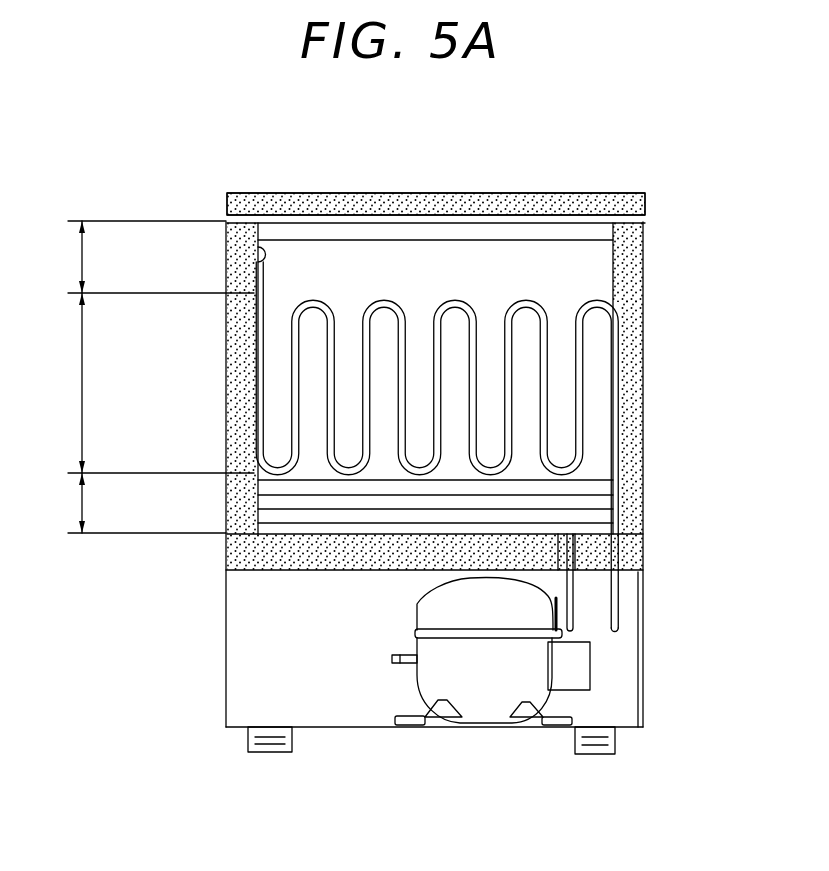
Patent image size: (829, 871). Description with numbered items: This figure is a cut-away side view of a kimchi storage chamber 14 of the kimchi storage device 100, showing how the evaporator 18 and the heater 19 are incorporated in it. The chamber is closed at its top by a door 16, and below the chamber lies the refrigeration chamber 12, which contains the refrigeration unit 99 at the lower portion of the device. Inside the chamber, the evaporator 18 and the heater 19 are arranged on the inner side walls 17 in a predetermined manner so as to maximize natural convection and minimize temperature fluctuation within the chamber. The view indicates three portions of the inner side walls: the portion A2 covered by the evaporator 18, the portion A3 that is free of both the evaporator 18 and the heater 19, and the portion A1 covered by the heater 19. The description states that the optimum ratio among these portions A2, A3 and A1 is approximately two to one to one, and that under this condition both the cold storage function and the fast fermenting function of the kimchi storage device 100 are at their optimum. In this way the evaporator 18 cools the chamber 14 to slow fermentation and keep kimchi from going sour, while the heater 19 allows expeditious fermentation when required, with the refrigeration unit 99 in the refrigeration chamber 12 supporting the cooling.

The kimchi storage device 100 is at (629, 146).
The refrigeration chamber 12 is at (243, 665).
The kimchi storage chamber 14 is at (542, 258).
The door 16 is at (387, 203).
The inner side walls 17 is at (258, 250).
The evaporator 18 is at (258, 425).
The heater 19 is at (258, 497).
The refrigeration unit 99 is at (462, 697).
The portion of the inner side walls covered by the heater A1 is at (161, 503).
The portion of the inner side walls covered by the evaporator A2 is at (161, 383).
The portion of the inner side walls free of the evaporator or the heater A3 is at (147, 257).